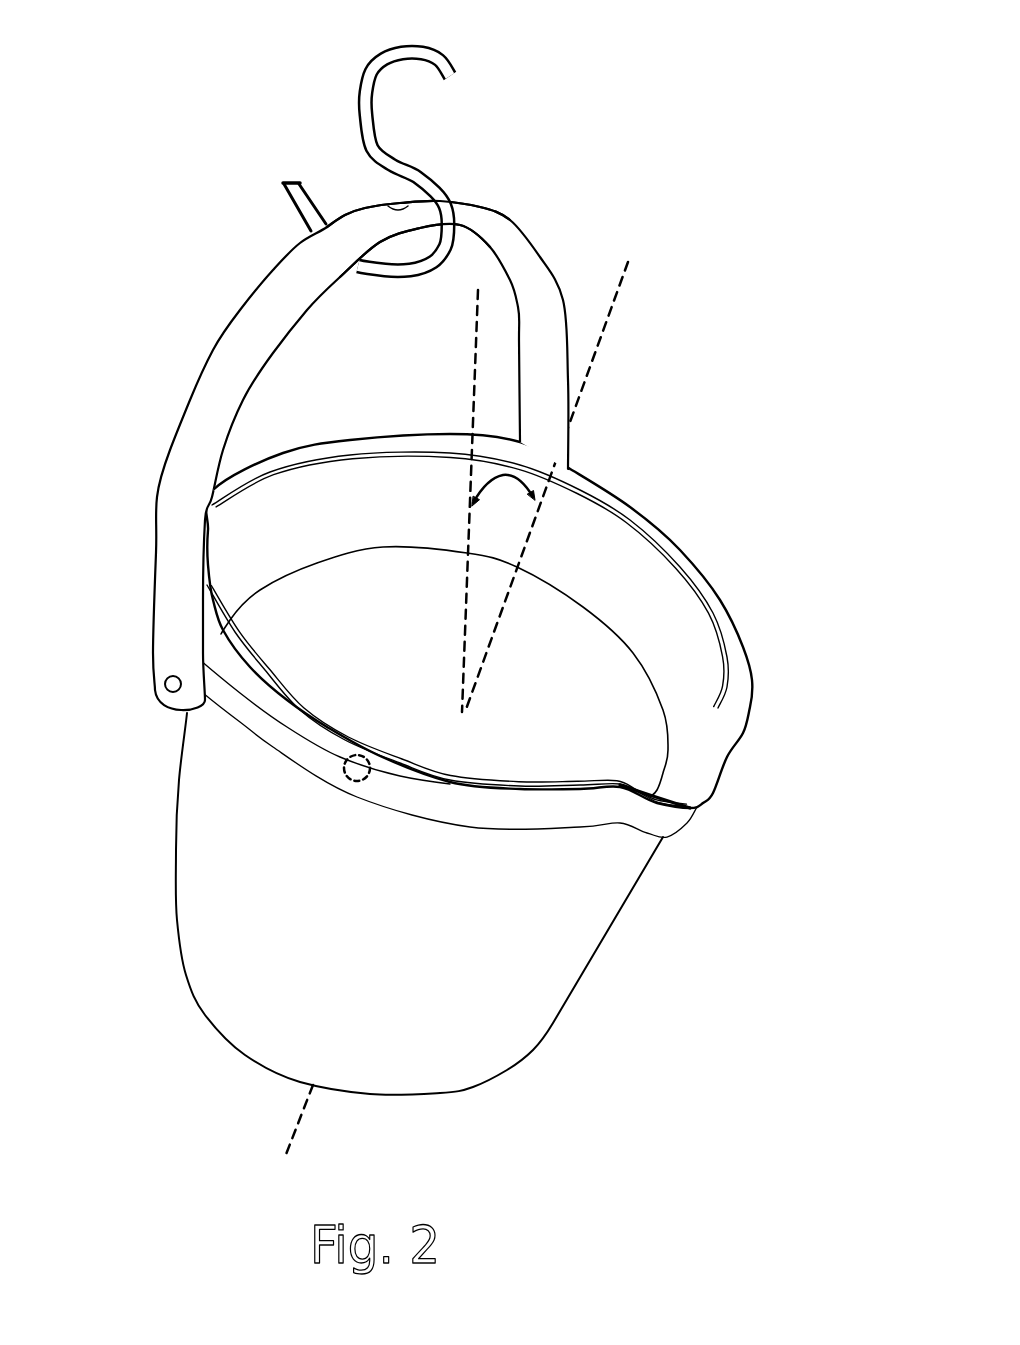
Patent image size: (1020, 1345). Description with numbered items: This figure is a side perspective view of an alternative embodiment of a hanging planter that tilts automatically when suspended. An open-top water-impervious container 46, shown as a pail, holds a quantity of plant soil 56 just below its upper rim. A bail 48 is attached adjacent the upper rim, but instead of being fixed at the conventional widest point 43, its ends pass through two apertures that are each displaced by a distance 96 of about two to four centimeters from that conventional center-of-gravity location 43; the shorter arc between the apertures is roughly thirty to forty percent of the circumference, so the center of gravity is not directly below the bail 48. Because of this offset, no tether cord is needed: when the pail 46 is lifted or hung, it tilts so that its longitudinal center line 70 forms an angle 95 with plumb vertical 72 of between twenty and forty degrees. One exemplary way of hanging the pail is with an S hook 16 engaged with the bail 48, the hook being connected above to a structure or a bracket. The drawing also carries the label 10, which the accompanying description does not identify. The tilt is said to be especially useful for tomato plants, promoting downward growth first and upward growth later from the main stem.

The bucket assembly 10 is at (564, 198).
The S hook 16 is at (360, 93).
The conventional widest point 43 is at (372, 779).
The open-top water-impervious container 46 is at (217, 908).
The bail 48 is at (213, 381).
The plant soil 56 is at (360, 643).
The longitudinal center line 70 is at (608, 324).
The plumb vertical 72 is at (470, 372).
The angle 95 is at (503, 498).
The distance 96 is at (192, 689).